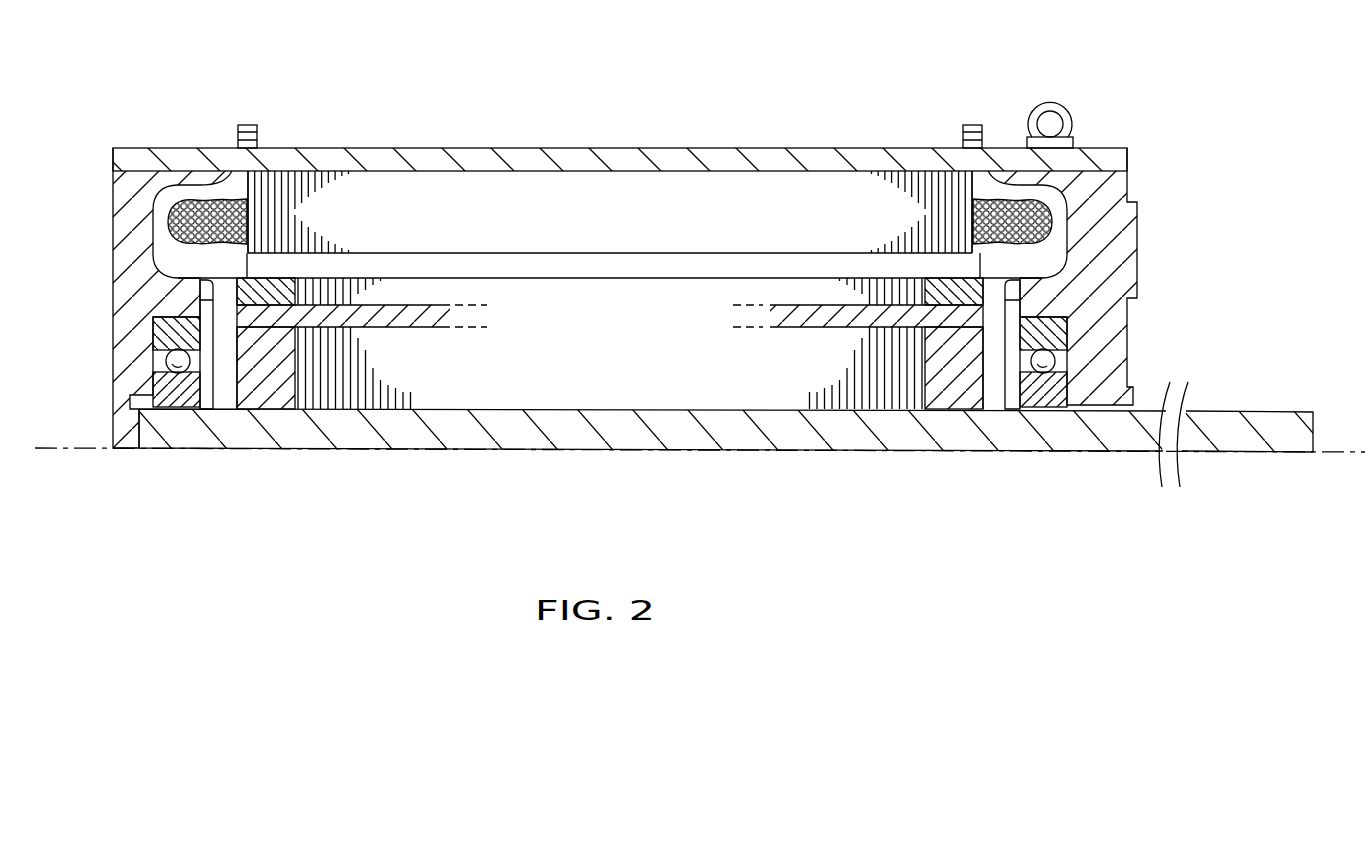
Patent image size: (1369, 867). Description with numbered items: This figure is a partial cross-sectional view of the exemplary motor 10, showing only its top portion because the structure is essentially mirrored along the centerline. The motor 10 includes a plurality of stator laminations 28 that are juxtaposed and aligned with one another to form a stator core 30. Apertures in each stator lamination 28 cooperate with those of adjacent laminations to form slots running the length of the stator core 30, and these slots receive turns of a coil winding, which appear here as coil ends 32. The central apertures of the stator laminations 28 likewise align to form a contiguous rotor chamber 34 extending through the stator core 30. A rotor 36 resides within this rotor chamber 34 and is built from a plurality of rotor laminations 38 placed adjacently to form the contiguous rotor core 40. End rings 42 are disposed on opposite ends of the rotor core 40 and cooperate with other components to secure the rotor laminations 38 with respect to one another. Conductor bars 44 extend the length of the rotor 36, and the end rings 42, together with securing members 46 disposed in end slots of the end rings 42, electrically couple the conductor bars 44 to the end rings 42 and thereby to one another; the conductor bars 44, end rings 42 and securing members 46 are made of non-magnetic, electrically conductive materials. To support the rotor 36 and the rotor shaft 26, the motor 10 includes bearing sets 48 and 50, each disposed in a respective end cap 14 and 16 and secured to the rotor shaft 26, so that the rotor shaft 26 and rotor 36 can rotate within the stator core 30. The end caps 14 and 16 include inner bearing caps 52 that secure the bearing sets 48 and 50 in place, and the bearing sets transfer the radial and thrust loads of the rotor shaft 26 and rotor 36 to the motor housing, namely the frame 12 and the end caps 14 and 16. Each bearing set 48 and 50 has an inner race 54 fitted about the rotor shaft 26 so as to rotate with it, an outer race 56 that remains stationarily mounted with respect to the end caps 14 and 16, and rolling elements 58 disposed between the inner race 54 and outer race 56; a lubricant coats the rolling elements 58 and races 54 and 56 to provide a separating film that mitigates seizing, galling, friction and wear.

The motor 10 is at (516, 60).
The frame 12 is at (371, 147).
The end cap 14 is at (1128, 152).
The end cap 16 is at (130, 148).
The rotor shaft 26 is at (1305, 438).
The stator laminations 28 is at (322, 168).
The stator core 30 is at (693, 203).
The coil ends 32 is at (190, 205).
The rotor chamber 34 is at (962, 268).
The rotor 36 is at (483, 380).
The rotor laminations 38 is at (337, 411).
The rotor core 40 is at (678, 362).
The end rings 42 is at (962, 266).
The conductor bars 44 is at (418, 305).
The securing members 46 is at (266, 335).
The bearing set 48 is at (1072, 325).
The bearing set 50 is at (150, 330).
The inner bearing caps 52 is at (200, 288).
The inner race 54 is at (178, 397).
The outer race 56 is at (200, 300).
The rolling elements 58 is at (167, 360).